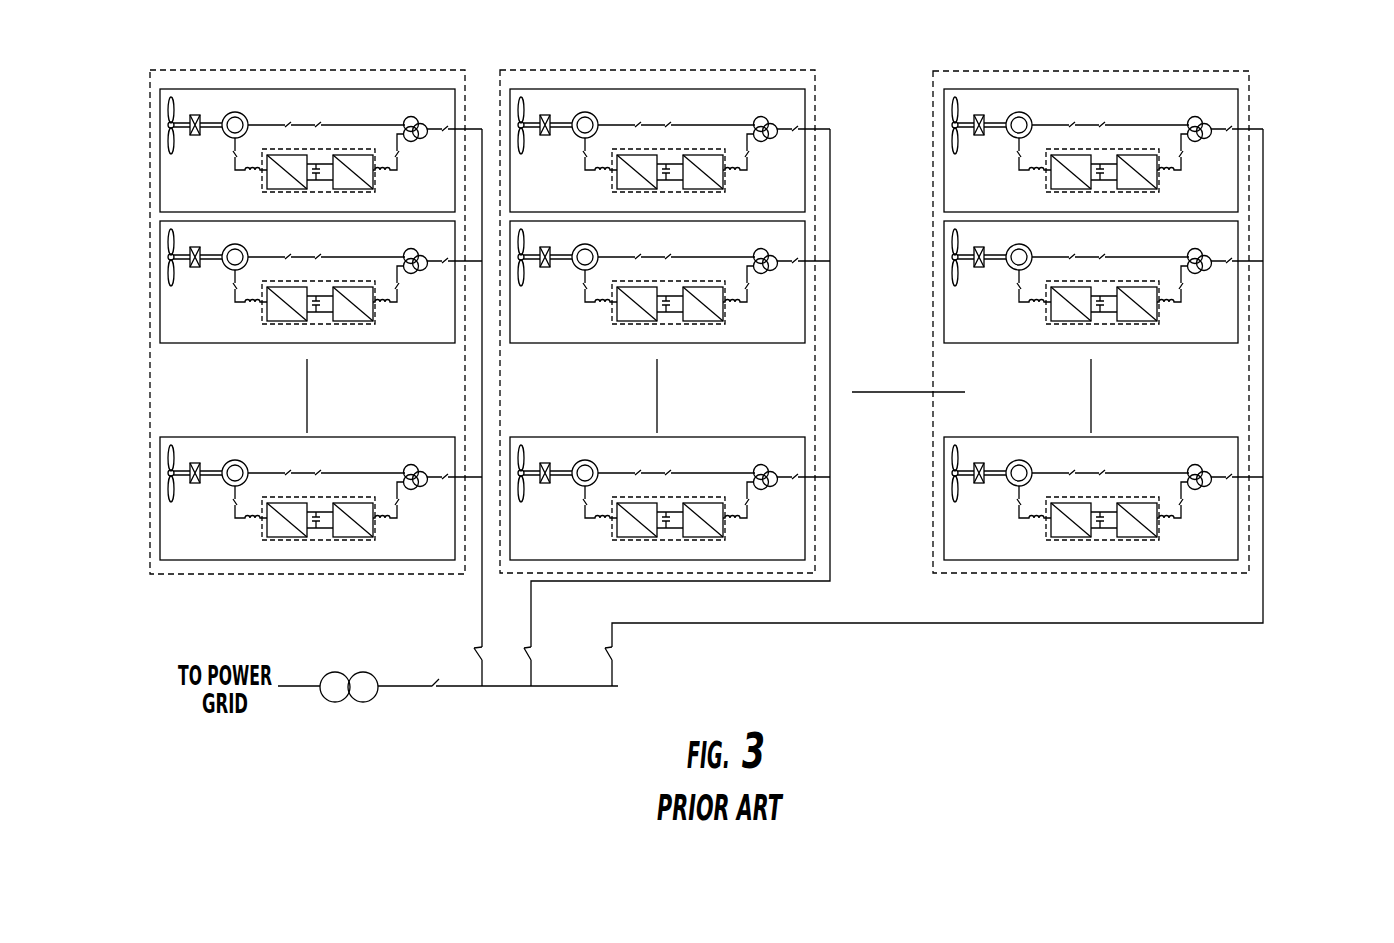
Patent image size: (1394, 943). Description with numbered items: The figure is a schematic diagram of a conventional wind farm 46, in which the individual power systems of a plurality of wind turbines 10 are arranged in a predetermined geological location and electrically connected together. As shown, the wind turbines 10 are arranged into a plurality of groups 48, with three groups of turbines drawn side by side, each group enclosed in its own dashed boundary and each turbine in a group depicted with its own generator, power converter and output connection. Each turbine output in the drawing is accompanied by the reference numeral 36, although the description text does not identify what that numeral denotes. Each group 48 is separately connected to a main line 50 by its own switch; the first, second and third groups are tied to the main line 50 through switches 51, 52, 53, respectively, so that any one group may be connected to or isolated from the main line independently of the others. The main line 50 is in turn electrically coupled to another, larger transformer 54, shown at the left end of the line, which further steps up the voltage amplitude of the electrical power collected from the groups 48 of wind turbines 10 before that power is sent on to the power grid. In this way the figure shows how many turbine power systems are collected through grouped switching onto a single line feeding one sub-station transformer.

The wind turbine 10 is at (340, 71).
The turbine transformer output breaker 36 is at (811, 290).
The wind farm 46 is at (1310, 97).
The group 48 is at (215, 574).
The main line 50 is at (587, 686).
The switch 51 is at (465, 653).
The switch 52 is at (518, 653).
The switch 53 is at (598, 653).
The transformer 54 is at (348, 652).